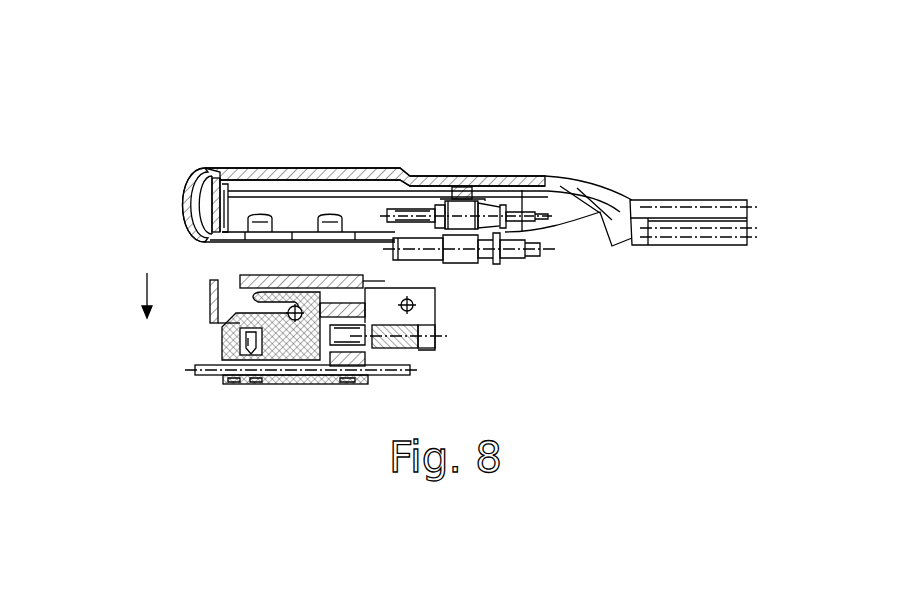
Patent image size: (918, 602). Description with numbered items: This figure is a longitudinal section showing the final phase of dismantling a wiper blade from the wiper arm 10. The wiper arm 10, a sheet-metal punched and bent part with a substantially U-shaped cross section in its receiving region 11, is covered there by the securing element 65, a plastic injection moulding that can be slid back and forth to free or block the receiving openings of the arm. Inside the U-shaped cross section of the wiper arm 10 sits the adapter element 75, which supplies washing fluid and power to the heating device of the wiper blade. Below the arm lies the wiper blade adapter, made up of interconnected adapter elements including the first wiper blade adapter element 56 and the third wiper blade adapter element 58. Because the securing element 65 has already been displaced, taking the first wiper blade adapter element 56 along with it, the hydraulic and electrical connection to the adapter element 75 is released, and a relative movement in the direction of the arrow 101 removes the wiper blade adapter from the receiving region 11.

The securing element 65 is at (317, 168).
The wiper arm 10 is at (681, 207).
The receiving region 11 is at (251, 238).
The arrow 101 is at (145, 288).
The adapter element 75 is at (513, 268).
The first wiper blade adapter element 56 is at (425, 310).
The third wiper blade adapter element 58 is at (288, 380).